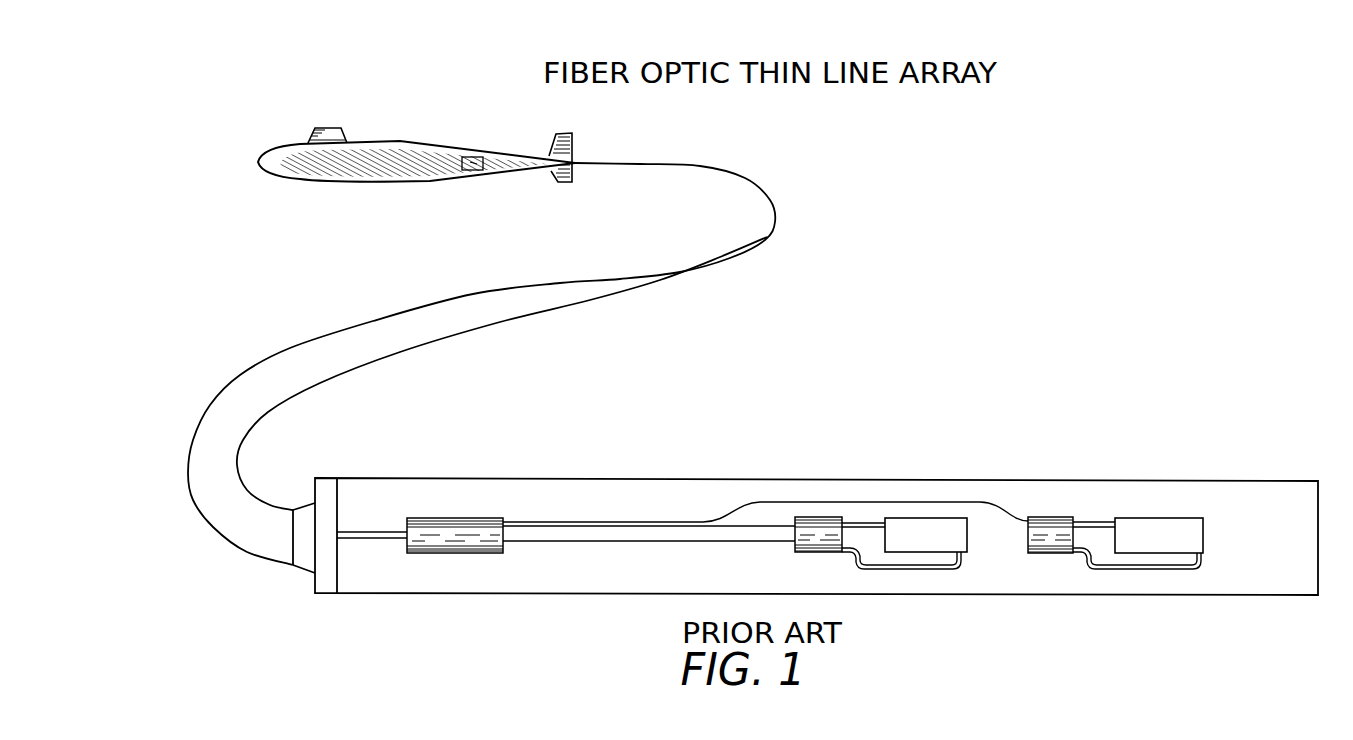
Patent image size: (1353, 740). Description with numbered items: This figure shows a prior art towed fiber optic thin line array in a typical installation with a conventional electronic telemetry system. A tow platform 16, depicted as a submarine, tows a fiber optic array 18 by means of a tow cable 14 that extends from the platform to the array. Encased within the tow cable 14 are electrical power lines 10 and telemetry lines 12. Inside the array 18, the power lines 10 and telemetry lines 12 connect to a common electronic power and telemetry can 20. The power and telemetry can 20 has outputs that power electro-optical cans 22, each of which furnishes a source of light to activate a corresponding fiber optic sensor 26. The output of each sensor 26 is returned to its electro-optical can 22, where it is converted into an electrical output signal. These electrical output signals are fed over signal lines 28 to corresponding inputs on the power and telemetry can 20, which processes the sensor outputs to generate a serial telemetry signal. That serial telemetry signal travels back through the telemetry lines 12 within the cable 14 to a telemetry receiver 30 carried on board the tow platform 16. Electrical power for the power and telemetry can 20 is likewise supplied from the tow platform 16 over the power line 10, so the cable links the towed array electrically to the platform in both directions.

The electrical power lines 10 is at (232, 398).
The telemetry lines 12 is at (261, 364).
The tow cable 14 is at (190, 452).
The tow platform 16 is at (405, 141).
The towed fiber optic array 18 is at (1176, 480).
The power and telemetry can 20 is at (465, 518).
The electro-optical can 22 is at (813, 552).
The fiber optic sensor 26 is at (968, 537).
The signal lines 28 is at (582, 542).
The telemetry receiver 30 is at (467, 171).